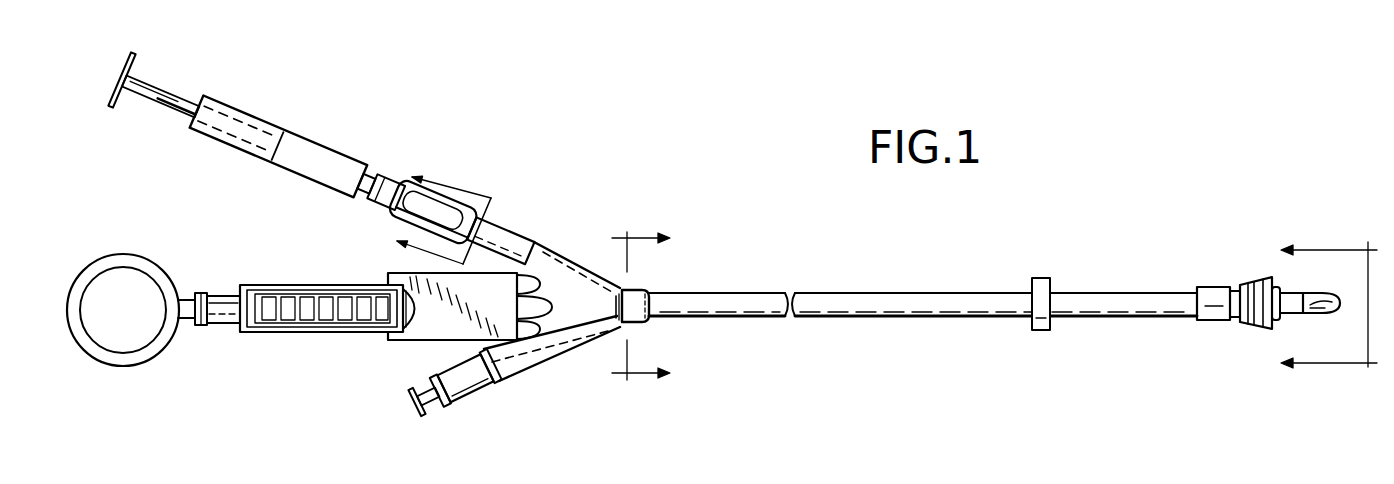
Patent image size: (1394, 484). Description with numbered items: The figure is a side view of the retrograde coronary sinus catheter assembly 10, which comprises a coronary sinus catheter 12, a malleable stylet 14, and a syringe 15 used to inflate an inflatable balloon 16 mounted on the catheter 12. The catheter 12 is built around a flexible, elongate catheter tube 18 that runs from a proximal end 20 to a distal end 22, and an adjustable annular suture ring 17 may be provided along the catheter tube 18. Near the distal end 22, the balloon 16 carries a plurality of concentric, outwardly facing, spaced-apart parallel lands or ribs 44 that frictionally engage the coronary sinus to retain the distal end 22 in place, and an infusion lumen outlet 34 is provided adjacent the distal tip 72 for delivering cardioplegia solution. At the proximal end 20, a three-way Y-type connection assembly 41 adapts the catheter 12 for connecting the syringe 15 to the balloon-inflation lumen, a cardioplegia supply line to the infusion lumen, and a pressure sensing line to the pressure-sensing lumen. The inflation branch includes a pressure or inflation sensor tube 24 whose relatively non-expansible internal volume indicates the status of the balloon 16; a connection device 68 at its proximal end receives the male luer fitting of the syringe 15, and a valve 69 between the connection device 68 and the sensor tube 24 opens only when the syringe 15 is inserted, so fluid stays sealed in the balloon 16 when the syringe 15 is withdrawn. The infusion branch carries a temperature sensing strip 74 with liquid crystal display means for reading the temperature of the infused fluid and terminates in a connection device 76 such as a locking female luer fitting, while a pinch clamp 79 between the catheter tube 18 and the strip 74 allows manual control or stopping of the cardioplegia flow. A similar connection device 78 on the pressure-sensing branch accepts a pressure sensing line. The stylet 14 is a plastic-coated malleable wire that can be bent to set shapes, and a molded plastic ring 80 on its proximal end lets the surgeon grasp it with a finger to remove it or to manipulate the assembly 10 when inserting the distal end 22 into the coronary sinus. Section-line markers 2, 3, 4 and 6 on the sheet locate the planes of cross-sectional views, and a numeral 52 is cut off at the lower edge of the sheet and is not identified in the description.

The coronary sinus catheter assembly 10 is at (904, 239).
The coronary sinus catheter 12 is at (810, 355).
The malleable stylet 14 is at (151, 281).
The syringe 15 is at (308, 128).
The inflatable balloon 16 is at (1235, 280).
The adjustable annular suture ring 17 is at (1040, 278).
The catheter tube 18 is at (809, 292).
The proximal end 20 is at (222, 325).
The distal end 22 is at (1278, 288).
The pressure or inflation sensor tube 24 is at (506, 234).
The infusion lumen outlet 34 is at (1334, 301).
The three-way Y-type connection assembly 41 is at (545, 375).
The lands or ribs 44 is at (1242, 322).
The element 52 is at (931, 479).
The connection device 68 is at (373, 203).
The valve 69 is at (416, 177).
The distal tip 72 is at (1318, 317).
The temperature sensing strip 74 is at (322, 335).
The connection device 76 is at (220, 295).
The connection device 78 is at (428, 412).
The clamp 79 is at (425, 338).
The ring 80 is at (106, 252).
The section line 2- 2 is at (1329, 311).
The section line 3 is at (1115, 468).
The section line 4- 4 is at (434, 206).
The section line 6- 6 is at (641, 307).